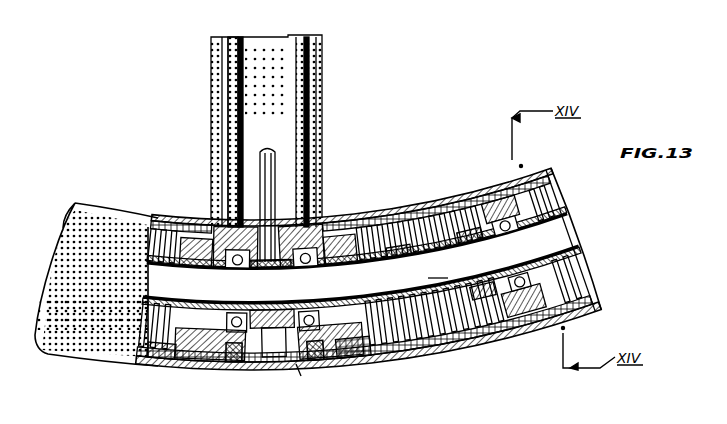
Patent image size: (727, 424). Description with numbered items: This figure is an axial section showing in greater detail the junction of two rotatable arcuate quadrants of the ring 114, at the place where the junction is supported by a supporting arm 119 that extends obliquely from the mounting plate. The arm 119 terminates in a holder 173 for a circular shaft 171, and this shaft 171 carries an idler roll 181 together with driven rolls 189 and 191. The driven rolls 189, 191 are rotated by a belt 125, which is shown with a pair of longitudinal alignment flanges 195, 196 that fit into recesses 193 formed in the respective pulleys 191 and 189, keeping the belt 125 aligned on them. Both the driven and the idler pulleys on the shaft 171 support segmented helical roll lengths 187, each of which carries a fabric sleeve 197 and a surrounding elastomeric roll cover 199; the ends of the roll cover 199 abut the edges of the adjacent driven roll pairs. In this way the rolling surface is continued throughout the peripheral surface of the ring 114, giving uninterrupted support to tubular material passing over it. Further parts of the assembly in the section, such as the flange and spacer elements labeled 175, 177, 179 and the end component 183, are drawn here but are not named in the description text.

The ring 114 is at (104, 374).
The supporting arm 119 is at (266, 150).
The belt 125 is at (221, 164).
The circular shaft 171 is at (361, 258).
The holder 173 is at (272, 333).
The flange 175 is at (318, 222).
The support block 177 is at (340, 265).
The spacer 179 is at (392, 262).
The idler roll 181 is at (499, 192).
The bearing assembly 183 is at (566, 232).
The segmented helical roll length 187 is at (490, 333).
The driven roll 189 is at (178, 366).
The driven roll 191 is at (341, 362).
The recess 193 is at (226, 366).
The longitudinal alignment flange 195 is at (298, 86).
The longitudinal alignment flange 196 is at (228, 90).
The fabric sleeve 197 is at (552, 175).
The elastomeric roll cover 199 is at (580, 312).